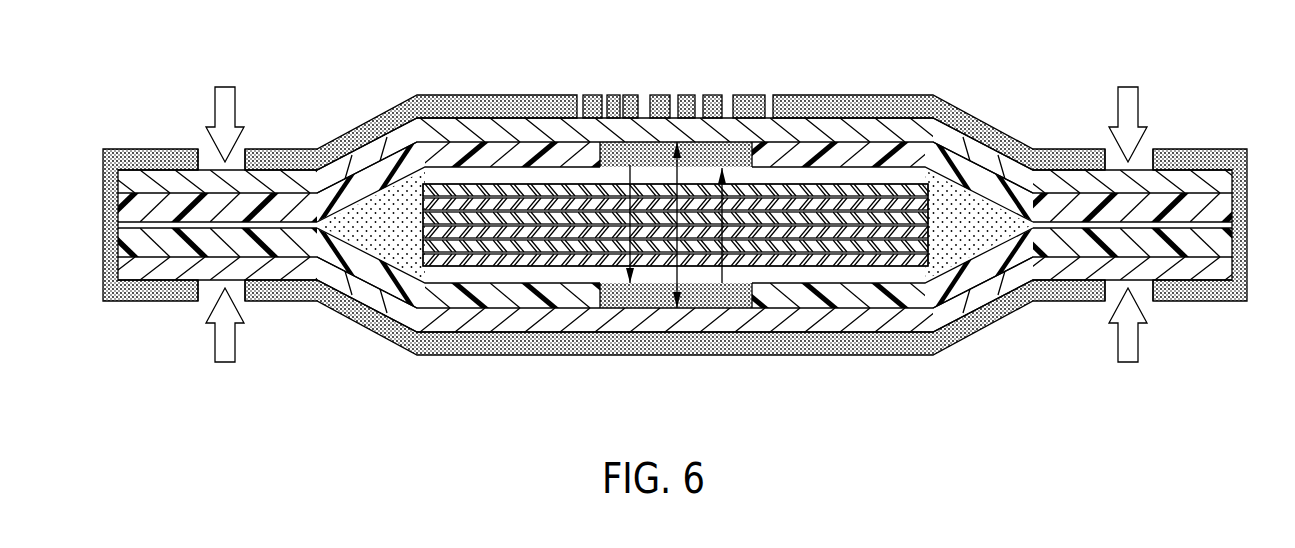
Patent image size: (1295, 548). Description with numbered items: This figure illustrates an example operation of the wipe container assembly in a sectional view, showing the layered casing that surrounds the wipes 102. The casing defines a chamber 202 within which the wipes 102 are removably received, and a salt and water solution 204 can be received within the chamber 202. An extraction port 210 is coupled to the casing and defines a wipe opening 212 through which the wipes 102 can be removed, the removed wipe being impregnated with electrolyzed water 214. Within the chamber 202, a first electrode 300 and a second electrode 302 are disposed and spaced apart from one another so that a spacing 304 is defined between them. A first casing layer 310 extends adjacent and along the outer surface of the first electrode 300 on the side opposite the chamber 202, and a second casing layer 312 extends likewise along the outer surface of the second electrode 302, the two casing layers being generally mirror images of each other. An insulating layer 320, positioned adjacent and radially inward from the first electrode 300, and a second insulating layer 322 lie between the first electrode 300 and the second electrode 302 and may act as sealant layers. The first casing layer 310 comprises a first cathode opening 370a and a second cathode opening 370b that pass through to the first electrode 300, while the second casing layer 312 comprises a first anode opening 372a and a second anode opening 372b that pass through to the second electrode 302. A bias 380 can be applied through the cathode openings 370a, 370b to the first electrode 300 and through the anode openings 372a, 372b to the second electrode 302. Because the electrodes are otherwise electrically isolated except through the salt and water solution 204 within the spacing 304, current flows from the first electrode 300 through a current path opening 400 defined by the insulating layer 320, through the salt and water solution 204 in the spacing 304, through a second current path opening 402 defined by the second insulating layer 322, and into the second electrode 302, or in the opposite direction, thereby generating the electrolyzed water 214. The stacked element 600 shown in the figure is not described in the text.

The wipes 102 is at (452, 184).
The chamber 202 is at (390, 197).
The salt and water solution 204 is at (697, 150).
The electrolyzed water 214 is at (640, 293).
The extraction port 210 is at (575, 93).
The wipe opening 212 is at (642, 100).
The first electrode 300 is at (128, 183).
The second electrode 302 is at (128, 268).
The spacing 304 is at (672, 170).
The first casing layer 310 is at (123, 158).
The second casing layer 312 is at (122, 293).
The insulating layer 320 is at (128, 212).
The second insulating layer 322 is at (128, 240).
The first cathode opening 370a is at (205, 153).
The second cathode opening 370b is at (1148, 153).
The first anode opening 372a is at (205, 300).
The second anode opening 372b is at (1148, 300).
The bias 380 is at (236, 106).
The current path opening 400 is at (737, 152).
The second current path opening 402 is at (697, 293).
The layer stack 600 is at (613, 233).